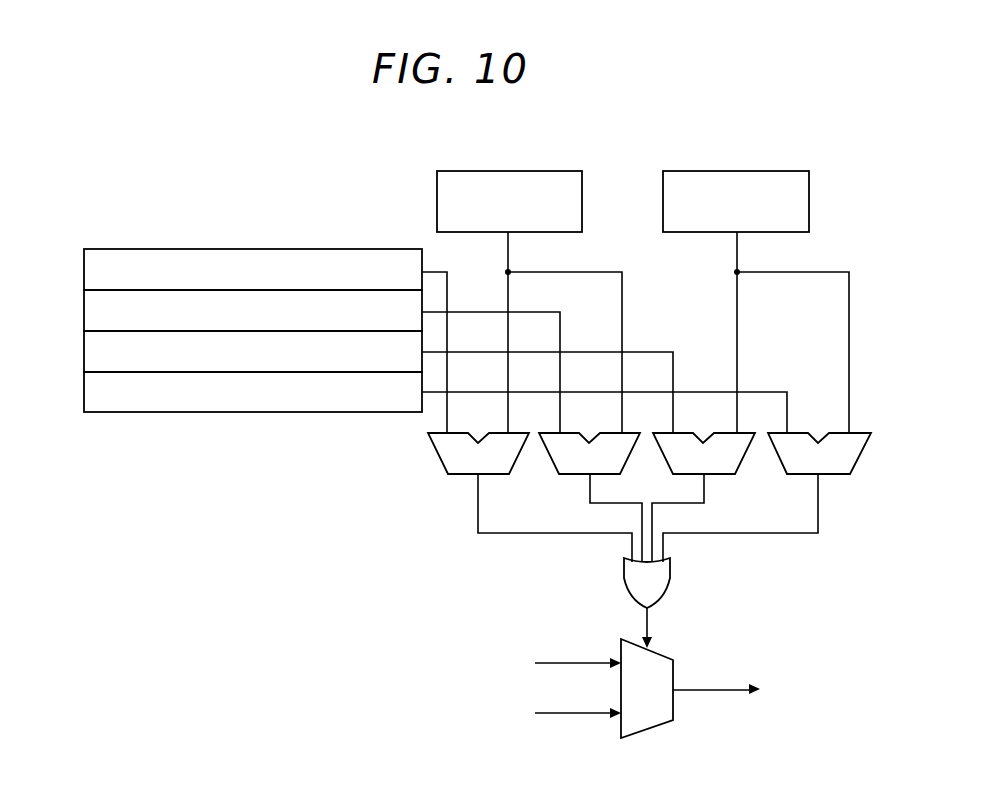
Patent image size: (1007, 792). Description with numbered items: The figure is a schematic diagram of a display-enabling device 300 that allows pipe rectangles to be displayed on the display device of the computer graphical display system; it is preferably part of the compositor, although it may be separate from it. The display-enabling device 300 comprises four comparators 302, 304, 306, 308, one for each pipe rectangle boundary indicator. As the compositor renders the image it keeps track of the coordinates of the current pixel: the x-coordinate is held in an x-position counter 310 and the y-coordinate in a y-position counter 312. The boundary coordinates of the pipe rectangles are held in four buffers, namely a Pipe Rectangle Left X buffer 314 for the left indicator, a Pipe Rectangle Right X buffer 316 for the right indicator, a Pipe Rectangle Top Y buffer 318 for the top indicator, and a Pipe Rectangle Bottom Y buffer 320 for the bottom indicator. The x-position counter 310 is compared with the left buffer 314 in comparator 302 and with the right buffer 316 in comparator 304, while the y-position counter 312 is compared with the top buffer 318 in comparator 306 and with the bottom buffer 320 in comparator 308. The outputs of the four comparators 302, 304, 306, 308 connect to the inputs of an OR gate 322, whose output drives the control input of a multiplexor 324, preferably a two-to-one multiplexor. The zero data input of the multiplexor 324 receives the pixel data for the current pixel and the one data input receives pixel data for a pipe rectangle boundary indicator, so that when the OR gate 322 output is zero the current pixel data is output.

The display-enabling device 300 is at (282, 87).
The comparator 302 is at (460, 477).
The comparator 304 is at (572, 477).
The comparator 306 is at (722, 477).
The comparator 308 is at (835, 477).
The x-position counter 310 is at (536, 171).
The y-position counter 312 is at (762, 171).
The Pipe Rectangle Left X buffer 314 is at (84, 270).
The Pipe Rectangle Right X buffer 316 is at (84, 310).
The Pipe Rectangle Top Y buffer 318 is at (86, 352).
The Pipe Rectangle Bottom Y buffer 320 is at (86, 393).
The OR gate 322 is at (672, 582).
The multiplexor 324 is at (648, 733).